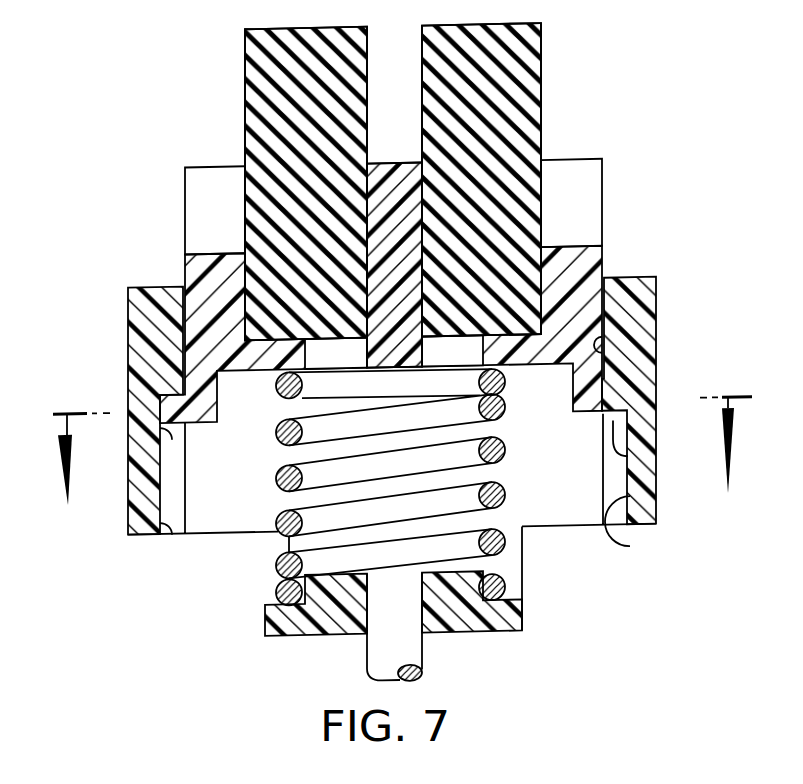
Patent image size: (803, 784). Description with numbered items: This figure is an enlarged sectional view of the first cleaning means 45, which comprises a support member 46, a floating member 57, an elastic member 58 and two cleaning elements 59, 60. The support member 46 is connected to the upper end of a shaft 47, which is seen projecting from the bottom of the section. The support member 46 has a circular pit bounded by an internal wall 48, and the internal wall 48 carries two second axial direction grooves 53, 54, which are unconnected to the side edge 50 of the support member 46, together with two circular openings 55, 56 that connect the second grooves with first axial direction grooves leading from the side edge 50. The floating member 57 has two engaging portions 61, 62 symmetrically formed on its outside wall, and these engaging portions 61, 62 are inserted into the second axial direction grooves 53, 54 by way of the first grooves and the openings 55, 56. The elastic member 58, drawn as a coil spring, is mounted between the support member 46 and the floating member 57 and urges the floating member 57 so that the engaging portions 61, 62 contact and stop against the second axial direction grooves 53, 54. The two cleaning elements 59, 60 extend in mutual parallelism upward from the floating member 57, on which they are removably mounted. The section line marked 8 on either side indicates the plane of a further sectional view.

The first cleaning means 45 is at (147, 190).
The support member 46 is at (677, 401).
The shaft 47 is at (365, 650).
The internal wall 48 is at (591, 351).
The side edge 50 is at (629, 276).
The second axial direction groove 53 is at (172, 524).
The second axial direction groove 54 is at (617, 502).
The circular opening 55 is at (217, 534).
The circular opening 56 is at (563, 531).
The floating member 57 is at (185, 265).
The elastic member 58 is at (276, 475).
The cleaning element 59 is at (245, 82).
The cleaning element 60 is at (541, 95).
The engaging portion 61 is at (165, 428).
The engaging portion 62 is at (657, 453).
The section line 8 is at (399, 477).